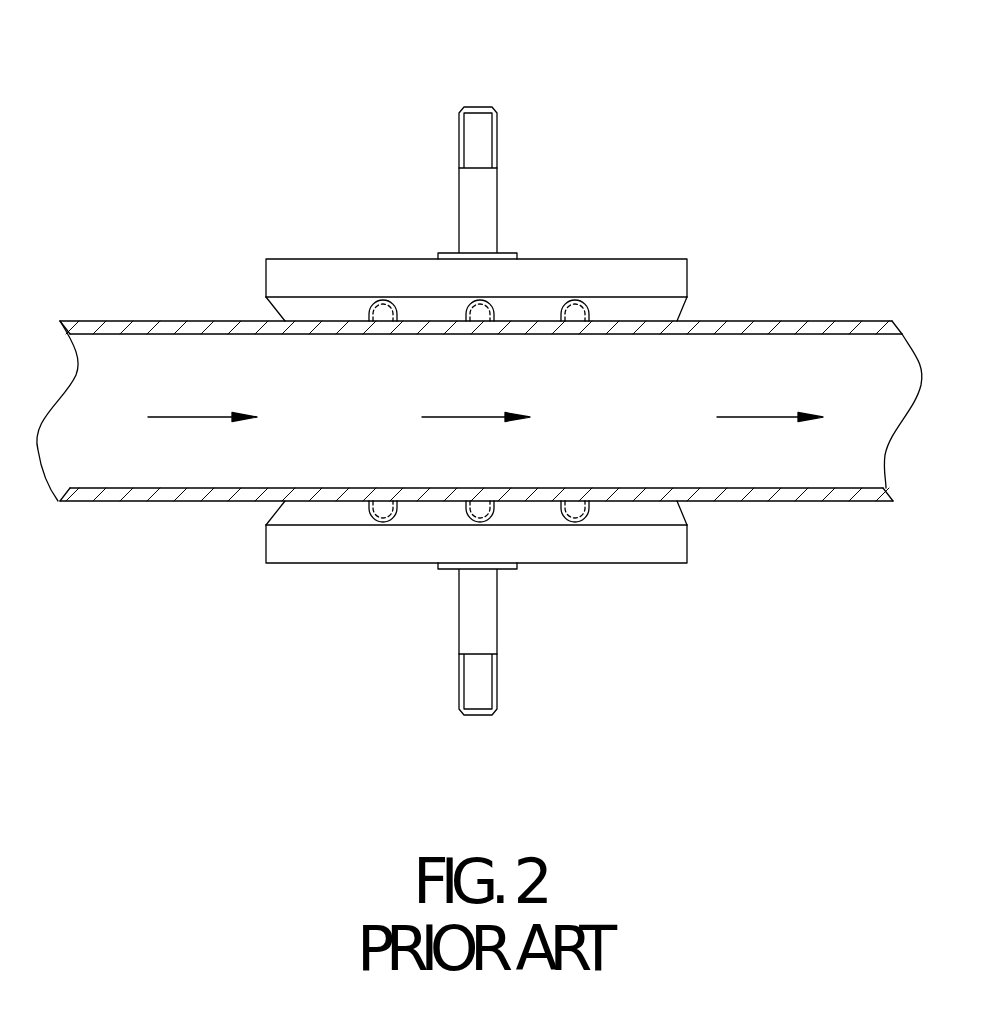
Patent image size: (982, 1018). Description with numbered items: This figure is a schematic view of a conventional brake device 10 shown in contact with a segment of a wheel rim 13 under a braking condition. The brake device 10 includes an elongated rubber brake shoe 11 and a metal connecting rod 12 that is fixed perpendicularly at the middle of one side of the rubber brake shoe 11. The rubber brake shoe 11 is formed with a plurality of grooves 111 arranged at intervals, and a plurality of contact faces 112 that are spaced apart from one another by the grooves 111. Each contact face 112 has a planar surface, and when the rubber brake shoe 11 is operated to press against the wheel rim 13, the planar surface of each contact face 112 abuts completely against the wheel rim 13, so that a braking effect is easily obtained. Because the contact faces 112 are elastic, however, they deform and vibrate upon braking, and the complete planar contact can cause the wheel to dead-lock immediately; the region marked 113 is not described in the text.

The brake device 10 is at (657, 260).
The rubber brake shoe 11 is at (366, 267).
The grooves 111 is at (397, 306).
The contact faces 112 is at (330, 306).
The chamfered end 113 is at (587, 320).
The connecting rod 12 is at (483, 143).
The wheel rim 13 is at (785, 330).